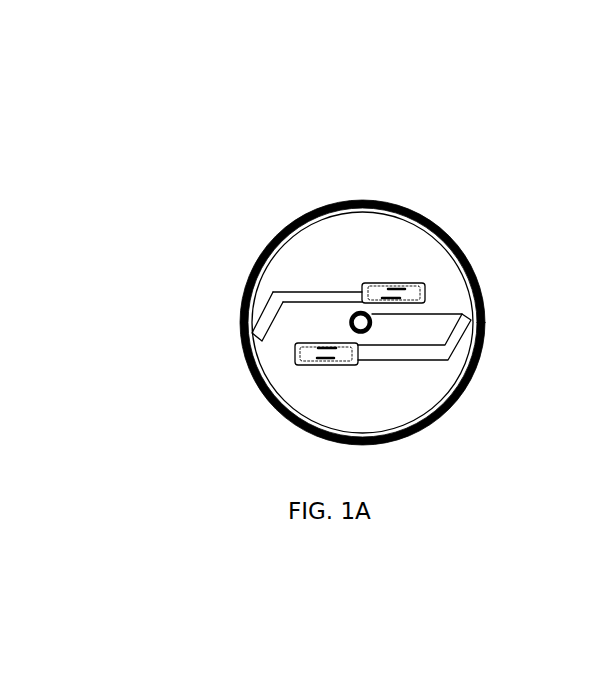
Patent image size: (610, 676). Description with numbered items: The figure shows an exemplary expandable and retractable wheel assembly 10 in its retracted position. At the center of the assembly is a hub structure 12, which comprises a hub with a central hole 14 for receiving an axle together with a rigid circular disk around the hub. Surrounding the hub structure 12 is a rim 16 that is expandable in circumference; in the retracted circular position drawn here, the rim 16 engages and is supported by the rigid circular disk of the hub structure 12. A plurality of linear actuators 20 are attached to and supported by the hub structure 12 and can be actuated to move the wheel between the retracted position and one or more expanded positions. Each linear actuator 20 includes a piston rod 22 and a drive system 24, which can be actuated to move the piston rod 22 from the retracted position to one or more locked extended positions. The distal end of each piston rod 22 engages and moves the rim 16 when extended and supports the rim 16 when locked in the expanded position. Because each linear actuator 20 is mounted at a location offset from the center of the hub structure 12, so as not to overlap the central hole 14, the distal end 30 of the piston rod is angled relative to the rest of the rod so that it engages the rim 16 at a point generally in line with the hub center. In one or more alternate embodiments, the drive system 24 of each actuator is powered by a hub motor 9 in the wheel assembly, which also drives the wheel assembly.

The expandable and retractable wheel assembly 10 is at (283, 115).
The hub structure 12 is at (362, 202).
The rim 16 is at (450, 239).
The linear actuator 20 is at (449, 405).
The central hole 14 is at (477, 313).
The piston rod 22 is at (320, 297).
The distal end of the piston rod 30 is at (256, 342).
The drive system 24 is at (300, 352).
The hub motor 9 is at (351, 352).